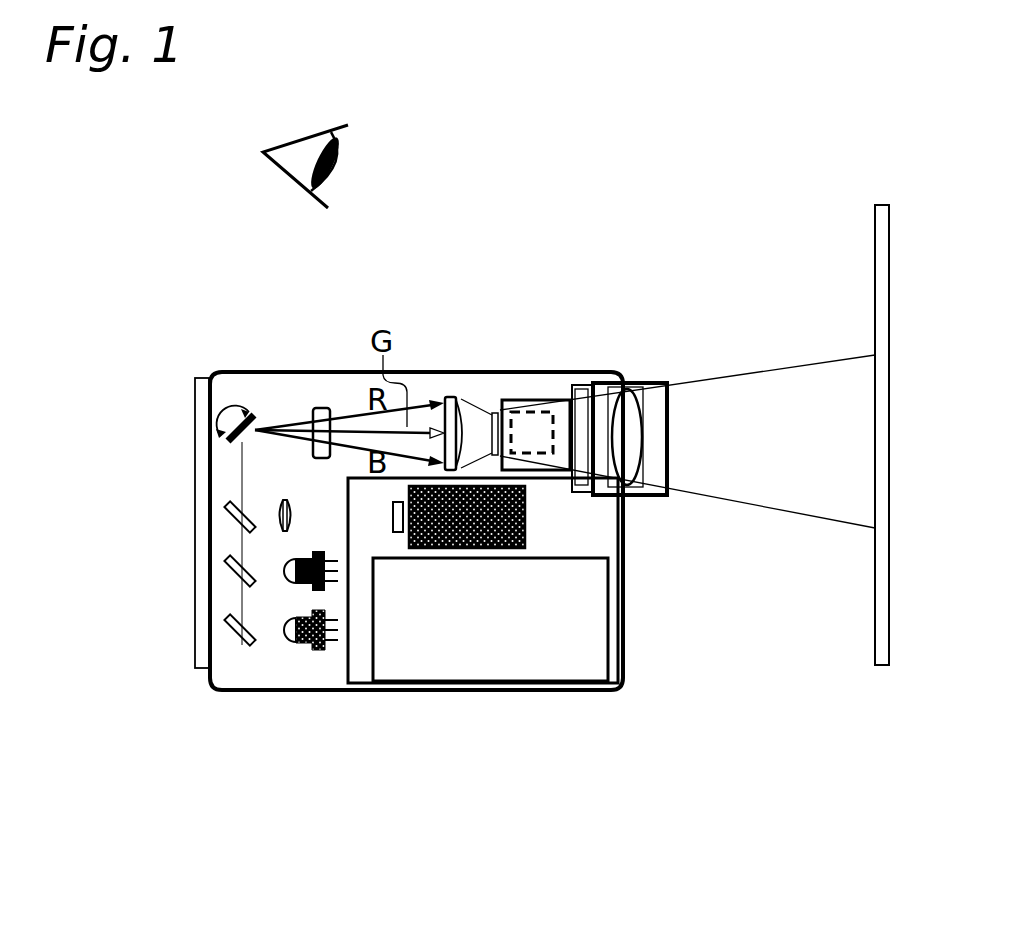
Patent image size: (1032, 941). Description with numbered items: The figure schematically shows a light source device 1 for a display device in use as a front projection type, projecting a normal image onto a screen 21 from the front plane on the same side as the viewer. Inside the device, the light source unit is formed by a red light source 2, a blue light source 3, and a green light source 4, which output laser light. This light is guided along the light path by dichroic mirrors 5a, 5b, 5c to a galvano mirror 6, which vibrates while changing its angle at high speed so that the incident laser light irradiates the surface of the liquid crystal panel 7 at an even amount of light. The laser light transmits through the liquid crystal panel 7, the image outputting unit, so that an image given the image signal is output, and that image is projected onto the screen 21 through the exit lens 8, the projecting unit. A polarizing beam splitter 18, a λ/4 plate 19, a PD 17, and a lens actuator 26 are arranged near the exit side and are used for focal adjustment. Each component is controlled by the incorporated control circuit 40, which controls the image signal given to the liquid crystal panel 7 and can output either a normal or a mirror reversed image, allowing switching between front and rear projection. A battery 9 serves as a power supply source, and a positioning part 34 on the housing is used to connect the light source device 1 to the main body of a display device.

The light source device 1 is at (712, 843).
The red light source 2 is at (300, 650).
The blue light source 3 is at (323, 590).
The green light source 4 is at (513, 530).
The dichroic mirror 5a is at (283, 632).
The dichroic mirror 5b is at (283, 572).
The dichroic mirror 5c is at (393, 514).
The galvano mirror 6 is at (227, 436).
The liquid crystal panel 7 is at (491, 405).
The exit lens 8 is at (632, 485).
The battery 9 is at (530, 652).
The PD 17 is at (537, 400).
The polarizing beam splitter 18 is at (549, 408).
The λ/4 plate 19 is at (582, 386).
The screen 21 is at (883, 212).
The lens actuator 26 is at (638, 389).
The positioning part 34 is at (204, 670).
The control circuit 40 is at (613, 590).